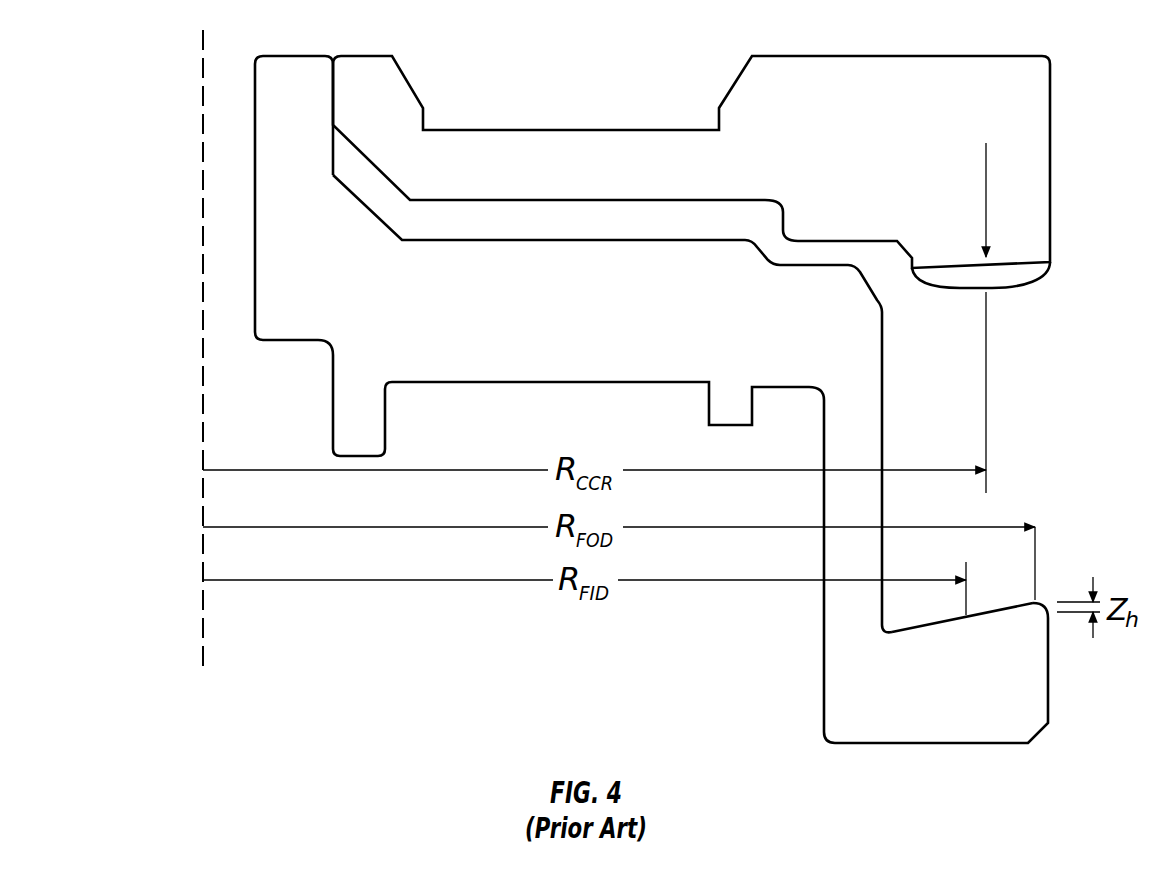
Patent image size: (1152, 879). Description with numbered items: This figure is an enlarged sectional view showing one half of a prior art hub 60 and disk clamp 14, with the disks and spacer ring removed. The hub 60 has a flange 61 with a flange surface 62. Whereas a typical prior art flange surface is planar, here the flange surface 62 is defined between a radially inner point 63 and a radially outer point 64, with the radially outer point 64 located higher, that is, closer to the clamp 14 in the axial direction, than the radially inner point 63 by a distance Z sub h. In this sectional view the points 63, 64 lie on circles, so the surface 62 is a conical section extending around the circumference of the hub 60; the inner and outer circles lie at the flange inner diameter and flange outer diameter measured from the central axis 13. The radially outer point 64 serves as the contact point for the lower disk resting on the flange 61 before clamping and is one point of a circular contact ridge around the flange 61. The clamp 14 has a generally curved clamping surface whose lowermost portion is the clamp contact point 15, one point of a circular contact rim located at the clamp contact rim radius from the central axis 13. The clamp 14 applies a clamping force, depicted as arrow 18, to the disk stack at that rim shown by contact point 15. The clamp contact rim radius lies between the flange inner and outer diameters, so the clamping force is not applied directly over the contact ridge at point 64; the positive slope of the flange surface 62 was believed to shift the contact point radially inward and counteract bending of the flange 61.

The central axis 13 is at (202, 620).
The disk clamp 14 is at (547, 157).
The clamp contact point 15 is at (988, 290).
The arrow 18 is at (987, 167).
The hub 60 is at (547, 263).
The flange 61 is at (1038, 688).
The flange surface 62 is at (981, 609).
The radially inner point 63 is at (965, 612).
The radially outer point 64 is at (1037, 600).